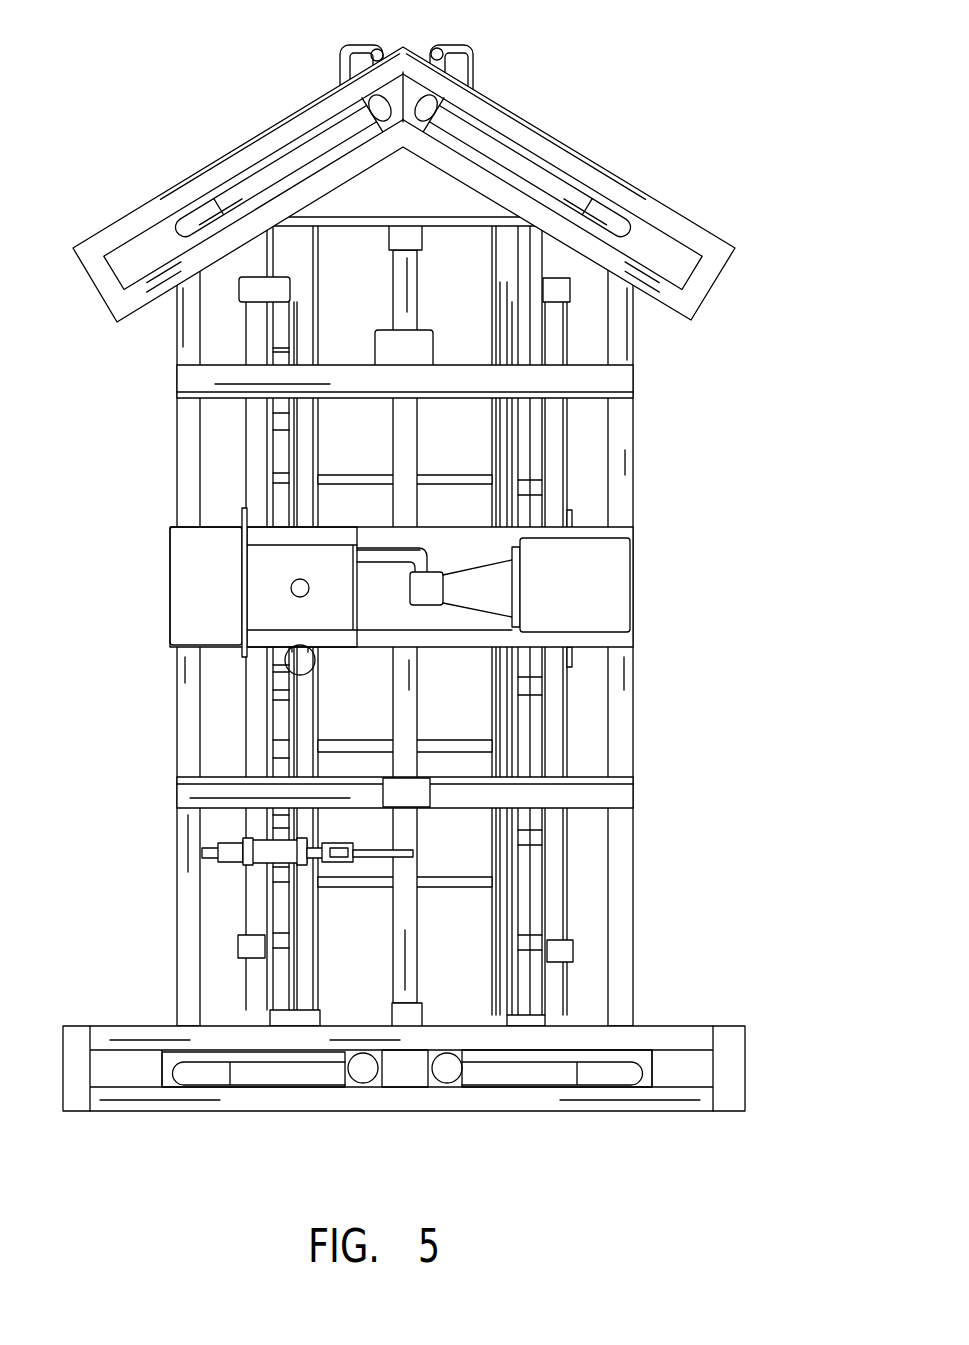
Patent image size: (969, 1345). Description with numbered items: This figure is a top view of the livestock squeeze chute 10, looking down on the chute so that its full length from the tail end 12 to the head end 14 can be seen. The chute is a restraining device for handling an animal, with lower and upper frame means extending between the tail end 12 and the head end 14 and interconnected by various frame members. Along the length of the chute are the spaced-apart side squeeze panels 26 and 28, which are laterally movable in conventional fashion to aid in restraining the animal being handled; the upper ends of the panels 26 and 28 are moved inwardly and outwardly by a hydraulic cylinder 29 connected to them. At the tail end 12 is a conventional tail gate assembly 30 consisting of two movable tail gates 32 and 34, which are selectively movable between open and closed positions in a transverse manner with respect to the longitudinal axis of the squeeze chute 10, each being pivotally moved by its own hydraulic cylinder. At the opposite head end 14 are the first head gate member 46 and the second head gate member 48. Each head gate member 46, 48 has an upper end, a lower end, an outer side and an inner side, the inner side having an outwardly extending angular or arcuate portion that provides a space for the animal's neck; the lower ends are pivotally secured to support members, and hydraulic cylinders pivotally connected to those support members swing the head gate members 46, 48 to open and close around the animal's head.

The livestock squeeze chute 10 is at (404, 606).
The tail end 12 is at (404, 1119).
The head end 14 is at (404, 161).
The side squeeze panel 26 is at (535, 687).
The side squeeze panel 28 is at (272, 703).
The hydraulic cylinder 29 is at (262, 853).
The tail gate assembly 30 is at (408, 1097).
The tail gate 32 is at (525, 1070).
The tail gate 34 is at (247, 1070).
The first head gate member 46 is at (560, 187).
The second head gate member 48 is at (265, 187).